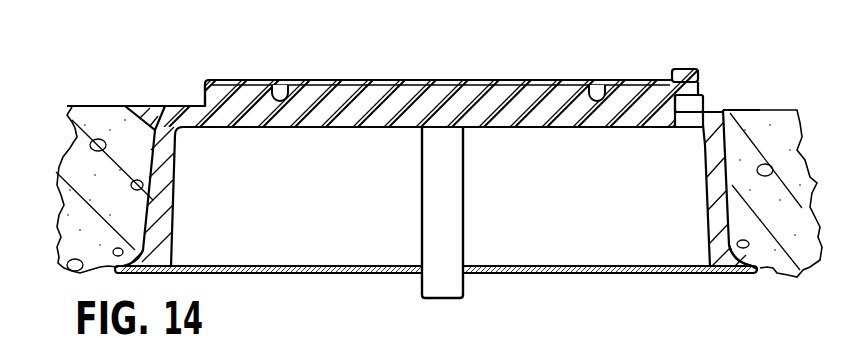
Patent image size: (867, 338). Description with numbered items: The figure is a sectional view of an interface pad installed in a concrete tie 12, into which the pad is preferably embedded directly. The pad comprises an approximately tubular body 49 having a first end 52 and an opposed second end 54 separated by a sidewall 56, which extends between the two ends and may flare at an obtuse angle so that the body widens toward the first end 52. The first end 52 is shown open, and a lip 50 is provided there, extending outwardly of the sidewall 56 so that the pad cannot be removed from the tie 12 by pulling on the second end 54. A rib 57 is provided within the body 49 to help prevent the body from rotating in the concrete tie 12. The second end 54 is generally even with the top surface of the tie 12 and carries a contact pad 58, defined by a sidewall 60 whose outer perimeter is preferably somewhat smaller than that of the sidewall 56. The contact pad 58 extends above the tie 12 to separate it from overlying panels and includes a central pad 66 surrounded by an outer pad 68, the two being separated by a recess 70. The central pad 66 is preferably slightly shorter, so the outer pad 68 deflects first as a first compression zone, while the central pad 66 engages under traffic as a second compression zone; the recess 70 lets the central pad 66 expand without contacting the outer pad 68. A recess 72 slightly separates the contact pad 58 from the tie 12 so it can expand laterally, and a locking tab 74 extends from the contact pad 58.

The concrete tie 12 is at (110, 118).
The tubular body 49 is at (150, 156).
The lip 50 is at (772, 273).
The first end 52 is at (657, 273).
The second end 54 is at (167, 107).
The sidewall 56 is at (740, 150).
The rib 57 is at (463, 296).
The contact pad 58 is at (625, 78).
The sidewall 60 is at (203, 98).
The central pad 66 is at (339, 80).
The outer pad 68 is at (229, 79).
The recess 70 is at (283, 80).
The recess 72 is at (717, 112).
The locking tab 74 is at (687, 69).